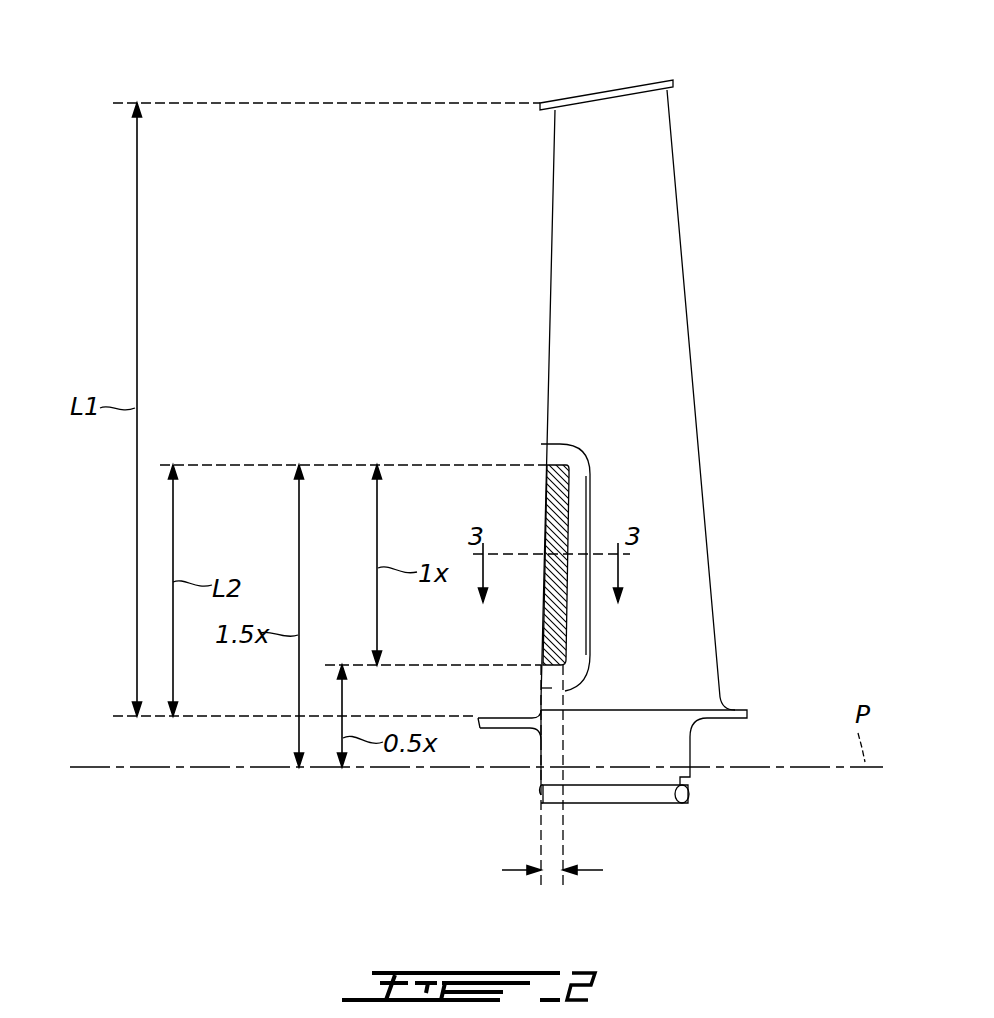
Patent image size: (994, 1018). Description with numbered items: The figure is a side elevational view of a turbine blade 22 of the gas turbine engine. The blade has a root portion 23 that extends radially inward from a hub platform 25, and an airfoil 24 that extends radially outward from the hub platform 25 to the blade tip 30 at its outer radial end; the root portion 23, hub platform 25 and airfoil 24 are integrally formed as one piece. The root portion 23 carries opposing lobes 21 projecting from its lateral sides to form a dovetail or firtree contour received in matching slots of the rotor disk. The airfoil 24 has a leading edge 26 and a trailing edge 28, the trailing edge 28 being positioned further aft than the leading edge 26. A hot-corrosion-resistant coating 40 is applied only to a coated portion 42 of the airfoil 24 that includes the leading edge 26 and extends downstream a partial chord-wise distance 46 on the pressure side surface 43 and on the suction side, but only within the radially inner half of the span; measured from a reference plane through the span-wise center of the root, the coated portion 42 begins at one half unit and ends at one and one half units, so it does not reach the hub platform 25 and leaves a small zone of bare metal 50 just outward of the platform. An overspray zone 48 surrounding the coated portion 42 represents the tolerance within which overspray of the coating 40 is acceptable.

The opposing lobes 21 is at (620, 795).
The turbine blade 22 is at (748, 198).
The root portion 23 is at (702, 788).
The airfoil 24 is at (627, 383).
The hub platform 25 is at (647, 732).
The leading edge 26 is at (553, 272).
The trailing edge 28 is at (685, 308).
The blade tip 30 is at (603, 122).
The hot-corrosion-resistant coating 40 is at (563, 510).
The coated portion 42 is at (540, 632).
The pressure side surface 43 is at (632, 359).
The partial chord-wise distance 46 is at (550, 875).
The overspray zone 48 is at (575, 628).
The zone of bare metal 50 is at (548, 703).